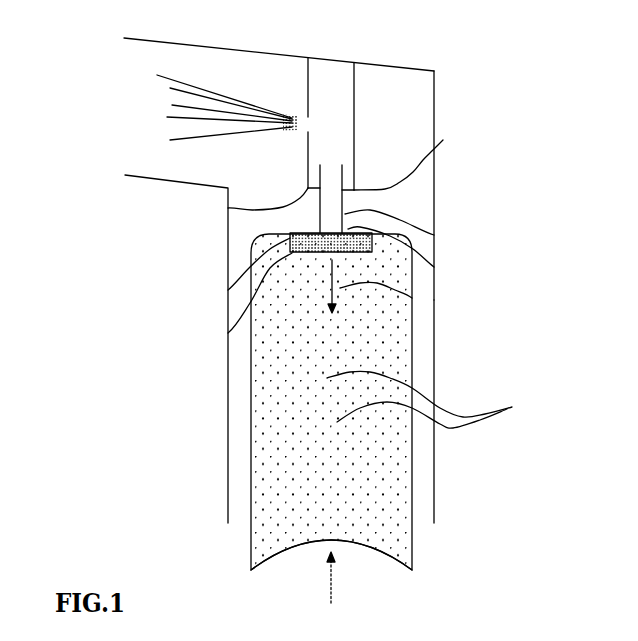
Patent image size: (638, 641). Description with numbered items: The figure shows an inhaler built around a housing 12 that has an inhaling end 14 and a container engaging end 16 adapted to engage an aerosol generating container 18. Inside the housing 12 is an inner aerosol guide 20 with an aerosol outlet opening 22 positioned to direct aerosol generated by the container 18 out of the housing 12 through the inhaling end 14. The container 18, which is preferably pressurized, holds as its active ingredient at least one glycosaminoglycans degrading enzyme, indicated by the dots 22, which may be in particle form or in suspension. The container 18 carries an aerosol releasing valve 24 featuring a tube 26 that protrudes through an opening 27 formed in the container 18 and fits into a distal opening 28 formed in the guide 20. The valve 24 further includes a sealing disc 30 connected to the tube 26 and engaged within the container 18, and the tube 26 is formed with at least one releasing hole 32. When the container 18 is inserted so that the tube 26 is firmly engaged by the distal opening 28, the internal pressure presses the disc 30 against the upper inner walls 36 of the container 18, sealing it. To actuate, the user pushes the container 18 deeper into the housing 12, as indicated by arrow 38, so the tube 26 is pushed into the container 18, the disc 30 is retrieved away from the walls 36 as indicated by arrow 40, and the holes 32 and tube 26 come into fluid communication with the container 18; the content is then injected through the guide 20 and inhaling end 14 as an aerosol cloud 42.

The housing 12 is at (437, 77).
The inhaling end 14 is at (148, 178).
The container engaging end 16 is at (437, 484).
The aerosol generating container 18 is at (252, 553).
The inner aerosol guide 20 is at (355, 118).
The aerosol outlet opening / glycosaminoglycans degrading enzyme 22 is at (306, 124).
The aerosol releasing valve 24 is at (356, 200).
The tube 26 is at (443, 140).
The opening 27 is at (434, 267).
The distal opening 28 is at (228, 208).
The sealing disc 30 is at (228, 290).
The releasing hole 32 is at (434, 235).
The upper inner walls 36 is at (228, 333).
The arrow 38 is at (333, 580).
The arrow 40 is at (412, 298).
The aerosol cloud 42 is at (197, 108).